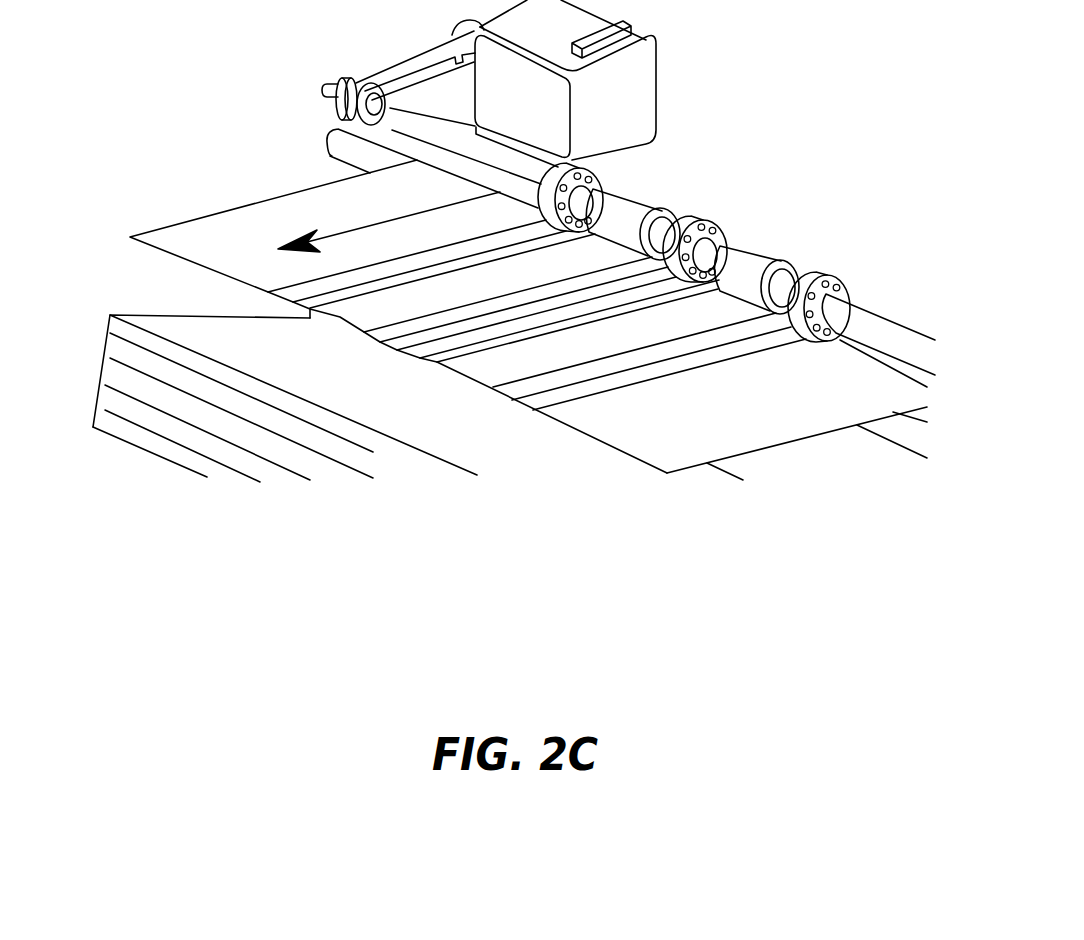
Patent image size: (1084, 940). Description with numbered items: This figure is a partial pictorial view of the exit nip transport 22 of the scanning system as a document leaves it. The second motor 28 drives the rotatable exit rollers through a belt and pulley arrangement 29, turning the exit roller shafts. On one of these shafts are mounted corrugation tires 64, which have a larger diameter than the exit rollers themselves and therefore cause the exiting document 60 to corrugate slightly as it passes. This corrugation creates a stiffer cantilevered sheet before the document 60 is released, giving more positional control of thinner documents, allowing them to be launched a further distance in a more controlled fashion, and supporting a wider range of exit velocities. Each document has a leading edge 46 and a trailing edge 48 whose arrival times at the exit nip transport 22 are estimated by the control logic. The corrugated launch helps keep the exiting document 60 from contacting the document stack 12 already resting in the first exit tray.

The document stack 12 is at (98, 391).
The exit nip transport 22 is at (805, 212).
The second motor 28 is at (657, 97).
The belt and pulley arrangement 29 is at (428, 49).
The leading edge 46 is at (165, 253).
The trailing edge 48 is at (876, 361).
The exiting document 60 is at (798, 441).
The corrugation tires 64 is at (604, 178).